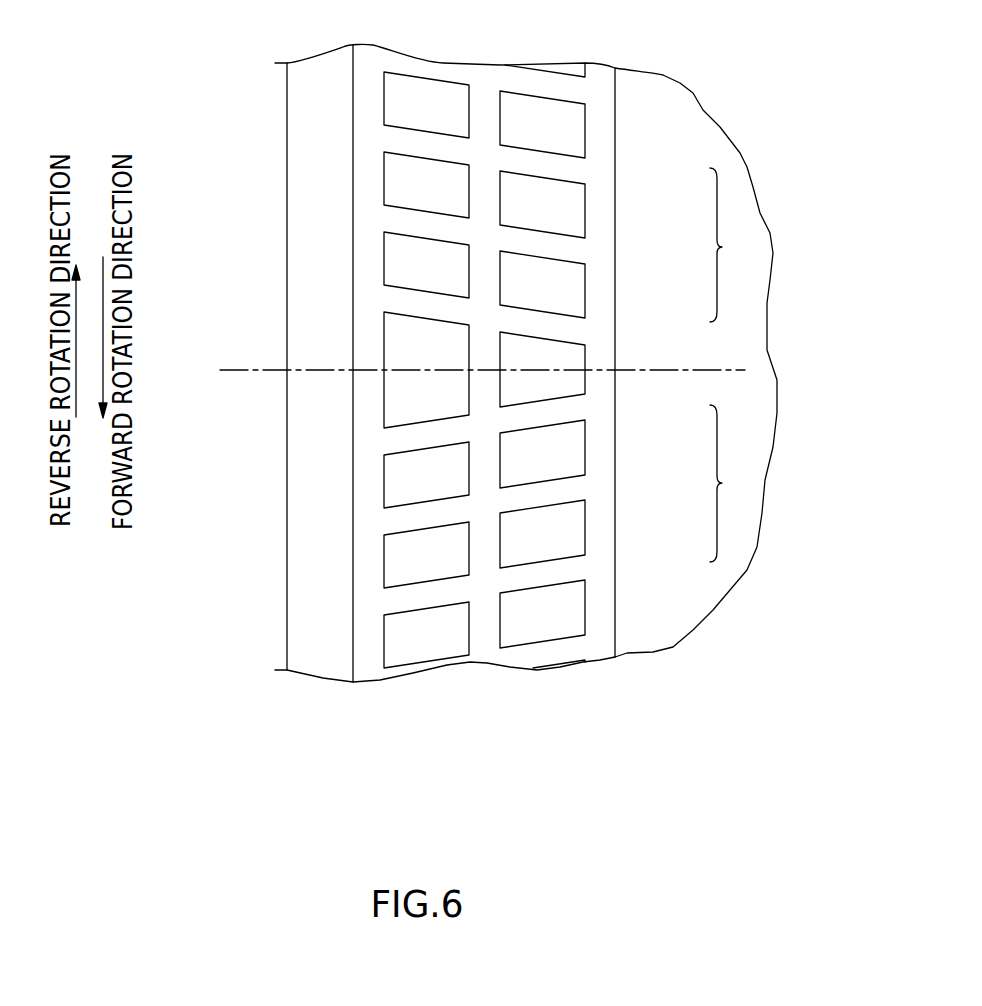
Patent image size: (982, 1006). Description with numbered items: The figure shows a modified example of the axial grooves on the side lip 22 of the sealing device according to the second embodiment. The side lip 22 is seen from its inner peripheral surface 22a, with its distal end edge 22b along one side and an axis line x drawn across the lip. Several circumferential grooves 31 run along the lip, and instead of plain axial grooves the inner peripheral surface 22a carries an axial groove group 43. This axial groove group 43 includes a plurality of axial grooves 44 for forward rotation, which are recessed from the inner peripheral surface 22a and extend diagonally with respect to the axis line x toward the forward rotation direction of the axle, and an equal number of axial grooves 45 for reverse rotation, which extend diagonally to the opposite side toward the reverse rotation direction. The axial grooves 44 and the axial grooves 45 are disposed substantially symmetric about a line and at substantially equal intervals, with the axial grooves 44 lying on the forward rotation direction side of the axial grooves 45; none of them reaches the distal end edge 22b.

The side lip 22 is at (657, 133).
The inner peripheral surface 22a is at (655, 612).
The distal end edge 22b is at (285, 187).
The circumferential groove 31 is at (367, 643).
The axial groove group 43 is at (732, 365).
The axial groove for forward rotation 44 is at (563, 410).
The axial groove for reverse rotation 45 is at (563, 172).
The axis line x is at (735, 368).